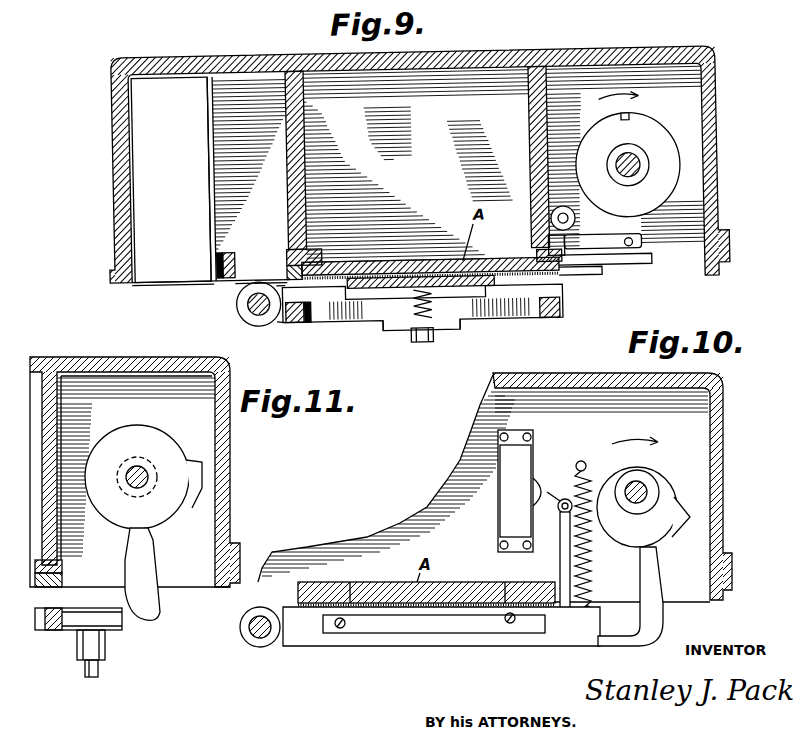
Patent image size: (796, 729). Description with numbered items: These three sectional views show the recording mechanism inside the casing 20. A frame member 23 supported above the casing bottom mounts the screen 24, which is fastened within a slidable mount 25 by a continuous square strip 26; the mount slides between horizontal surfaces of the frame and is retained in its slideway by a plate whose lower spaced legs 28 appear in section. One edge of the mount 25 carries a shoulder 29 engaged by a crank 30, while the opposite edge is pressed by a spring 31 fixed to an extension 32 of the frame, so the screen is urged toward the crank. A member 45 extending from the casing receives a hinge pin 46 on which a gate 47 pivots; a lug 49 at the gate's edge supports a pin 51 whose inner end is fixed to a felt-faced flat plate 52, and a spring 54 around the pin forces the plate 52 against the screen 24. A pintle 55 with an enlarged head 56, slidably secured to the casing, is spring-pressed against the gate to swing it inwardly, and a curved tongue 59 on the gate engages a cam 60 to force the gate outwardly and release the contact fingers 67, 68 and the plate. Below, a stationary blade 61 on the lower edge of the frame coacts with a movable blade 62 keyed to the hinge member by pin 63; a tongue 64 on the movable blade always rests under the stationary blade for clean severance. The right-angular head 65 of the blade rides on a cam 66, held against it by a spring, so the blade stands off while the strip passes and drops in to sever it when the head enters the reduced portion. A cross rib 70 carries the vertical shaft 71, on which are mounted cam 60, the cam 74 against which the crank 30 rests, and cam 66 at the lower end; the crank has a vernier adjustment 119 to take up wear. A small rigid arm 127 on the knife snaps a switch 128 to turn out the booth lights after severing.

In FIG. 9, the casing 20 is at (237, 52).
In FIG. 11, the casing 20 is at (232, 438).
In FIG. 10, the casing 20 is at (725, 437).
In FIG. 9, the frame member 23 is at (305, 133).
In FIG. 11, the frame member 23 is at (67, 376).
In FIG. 9, the screen 24 is at (421, 262).
In FIG. 9, the slidable mount 25 is at (292, 248).
In FIG. 11, the slidable mount 25 is at (70, 563).
In FIG. 9, the continuous square strip 26 is at (318, 268).
In FIG. 11, the continuous square strip 26 is at (68, 580).
In FIG. 9, the lower spaced legs 28 is at (315, 302).
In FIG. 9, the shoulder 29 is at (560, 271).
In FIG. 9, the crank 30 is at (641, 251).
In FIG. 9, the spring 31 is at (220, 280).
In FIG. 9, the extension 32 is at (193, 203).
In FIG. 9, the member 45 is at (236, 286).
In FIG. 9, the hinge pin 46 is at (253, 307).
In FIG. 10, the hinge pin 46 is at (252, 633).
In FIG. 9, the gate 47 is at (291, 313).
In FIG. 11, the gate 47 is at (55, 631).
In FIG. 9, the lug 49 is at (418, 342).
In FIG. 9, the pin 51 is at (430, 312).
In FIG. 9, the flat plate 52 is at (460, 293).
In FIG. 9, the spring 54 is at (420, 303).
In FIG. 11, the pintle 55 is at (98, 675).
In FIG. 11, the enlarged head 56 is at (99, 648).
In FIG. 11, the curved tongue 59 is at (157, 618).
In FIG. 11, the cam 60 is at (188, 502).
In FIG. 10, the stationary blade 61 is at (457, 587).
In FIG. 10, the movable blade 62 is at (397, 627).
In FIG. 10, the pin 63 is at (262, 643).
In FIG. 10, the tongue 64 is at (540, 622).
In FIG. 10, the right-angular head 65 is at (663, 577).
In FIG. 10, the cam 66 is at (673, 523).
In FIG. 10, the contact finger 67 is at (594, 563).
In FIG. 9, the contact finger 68 is at (371, 299).
In FIG. 9, the cross rib 70 is at (690, 206).
In FIG. 9, the vertical shaft 71 is at (640, 172).
In FIG. 11, the vertical shaft 71 is at (148, 481).
In FIG. 10, the vertical shaft 71 is at (647, 491).
In FIG. 9, the cam 74 is at (665, 150).
In FIG. 9, the vernier adjustment 119 is at (585, 278).
In FIG. 10, the rigid arm 127 is at (560, 566).
In FIG. 10, the switch 128 is at (523, 461).